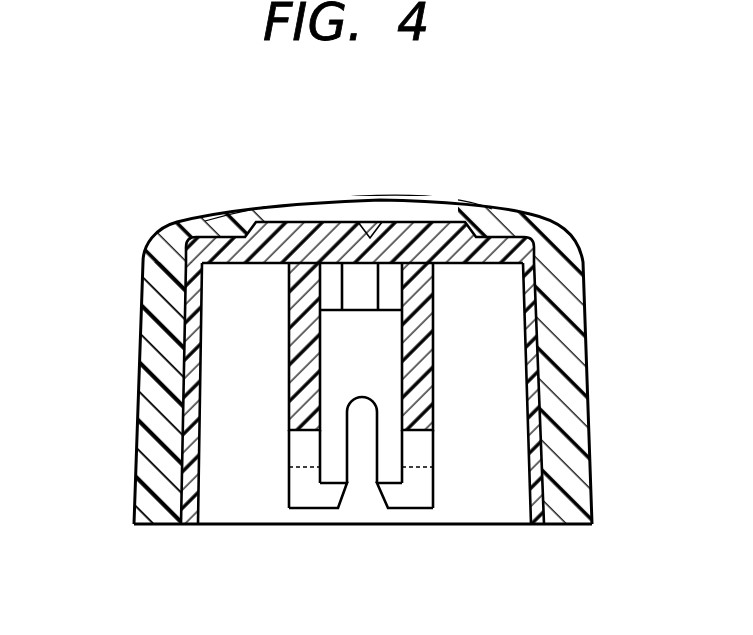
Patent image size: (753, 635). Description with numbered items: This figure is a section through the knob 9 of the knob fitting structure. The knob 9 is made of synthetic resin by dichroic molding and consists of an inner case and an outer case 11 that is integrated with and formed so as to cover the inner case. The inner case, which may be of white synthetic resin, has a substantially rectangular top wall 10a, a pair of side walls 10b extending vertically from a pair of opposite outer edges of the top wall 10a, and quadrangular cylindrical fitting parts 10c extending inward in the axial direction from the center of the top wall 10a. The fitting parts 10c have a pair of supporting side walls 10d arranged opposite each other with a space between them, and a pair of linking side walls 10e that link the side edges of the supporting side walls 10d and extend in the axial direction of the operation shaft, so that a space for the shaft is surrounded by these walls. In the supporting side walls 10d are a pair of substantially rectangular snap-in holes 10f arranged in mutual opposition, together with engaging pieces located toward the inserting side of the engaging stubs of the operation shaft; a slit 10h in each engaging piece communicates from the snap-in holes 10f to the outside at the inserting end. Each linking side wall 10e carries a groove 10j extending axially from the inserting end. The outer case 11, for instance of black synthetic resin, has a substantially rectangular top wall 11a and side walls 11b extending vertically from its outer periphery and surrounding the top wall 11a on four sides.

The knob 9 is at (604, 207).
The outer case 11 is at (534, 205).
The top wall 11a is at (226, 214).
The side walls 11b is at (147, 295).
The top wall 10a is at (279, 235).
The side walls 10b is at (184, 362).
The fitting parts 10c is at (280, 367).
The supporting side walls 10d is at (427, 405).
The linking side walls 10e is at (388, 333).
The snap-in holes 10f is at (293, 440).
The slit 10h is at (302, 492).
The groove 10j is at (360, 482).